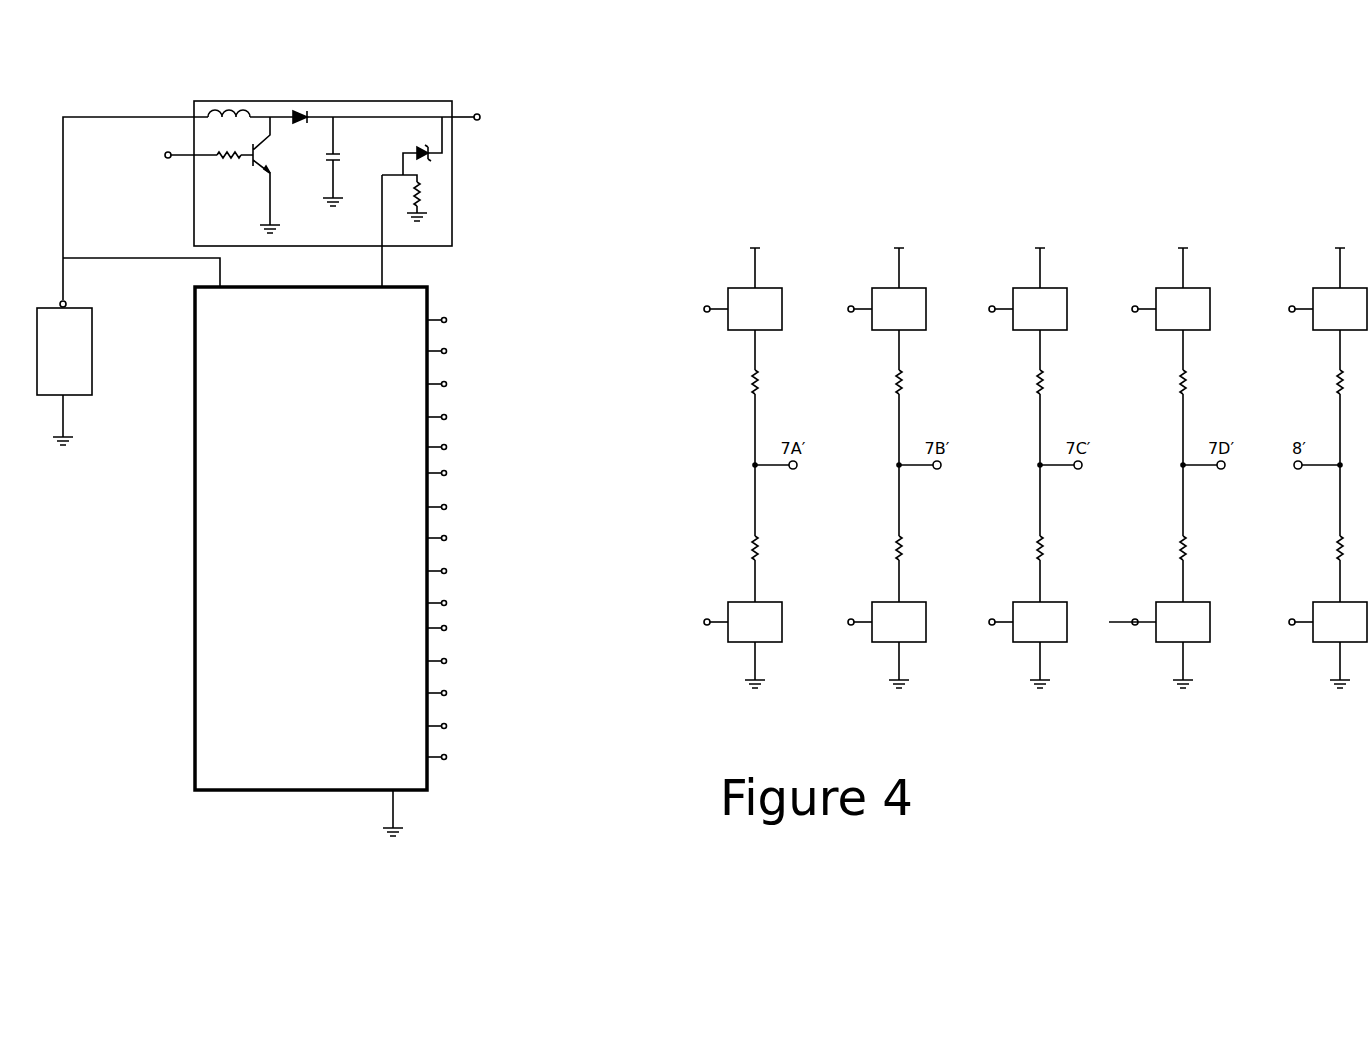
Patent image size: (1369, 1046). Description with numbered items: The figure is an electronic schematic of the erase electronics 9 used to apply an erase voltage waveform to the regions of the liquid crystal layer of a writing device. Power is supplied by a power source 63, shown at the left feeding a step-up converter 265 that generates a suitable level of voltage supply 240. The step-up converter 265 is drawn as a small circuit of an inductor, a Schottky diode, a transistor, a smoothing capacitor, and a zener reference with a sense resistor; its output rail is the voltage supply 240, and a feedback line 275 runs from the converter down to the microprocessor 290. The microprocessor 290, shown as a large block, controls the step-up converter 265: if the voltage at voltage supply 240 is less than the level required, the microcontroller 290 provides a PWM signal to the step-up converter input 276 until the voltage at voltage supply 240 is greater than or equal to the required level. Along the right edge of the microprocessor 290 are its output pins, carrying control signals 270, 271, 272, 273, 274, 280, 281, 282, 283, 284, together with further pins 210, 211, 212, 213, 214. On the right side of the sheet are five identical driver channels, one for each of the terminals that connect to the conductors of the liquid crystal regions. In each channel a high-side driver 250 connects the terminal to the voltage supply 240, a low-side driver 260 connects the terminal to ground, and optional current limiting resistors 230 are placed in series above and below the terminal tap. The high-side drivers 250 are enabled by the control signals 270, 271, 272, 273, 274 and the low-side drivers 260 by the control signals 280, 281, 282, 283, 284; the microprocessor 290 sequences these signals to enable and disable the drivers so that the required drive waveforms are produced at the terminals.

The erase electronics 9 is at (624, 112).
The power source 63 is at (64, 373).
The step-up converter 265 is at (311, 162).
The feedback line 275 is at (404, 231).
The step-up converter input 276 is at (148, 155).
The voltage supply 240 is at (904, 197).
The microprocessor 290 is at (311, 561).
The control signal 270 is at (577, 314).
The control signal 271 is at (649, 330).
The control signal 272 is at (720, 346).
The control signal 273 is at (791, 363).
The control signal 274 is at (870, 378).
The control signal 280 is at (577, 548).
The control signal 281 is at (649, 565).
The control signal 282 is at (720, 580).
The control signal 283 is at (791, 597).
The control signal 284 is at (870, 613).
The sensor input line 210 is at (453, 628).
The sensor input line 211 is at (453, 661).
The sensor input line 212 is at (453, 693).
The sensor input line 213 is at (453, 726).
The sensor input line 214 is at (453, 757).
The high-side driver 250 is at (1047, 309).
The low-side driver 260 is at (1047, 645).
The current limiting resistor 230 is at (1028, 466).